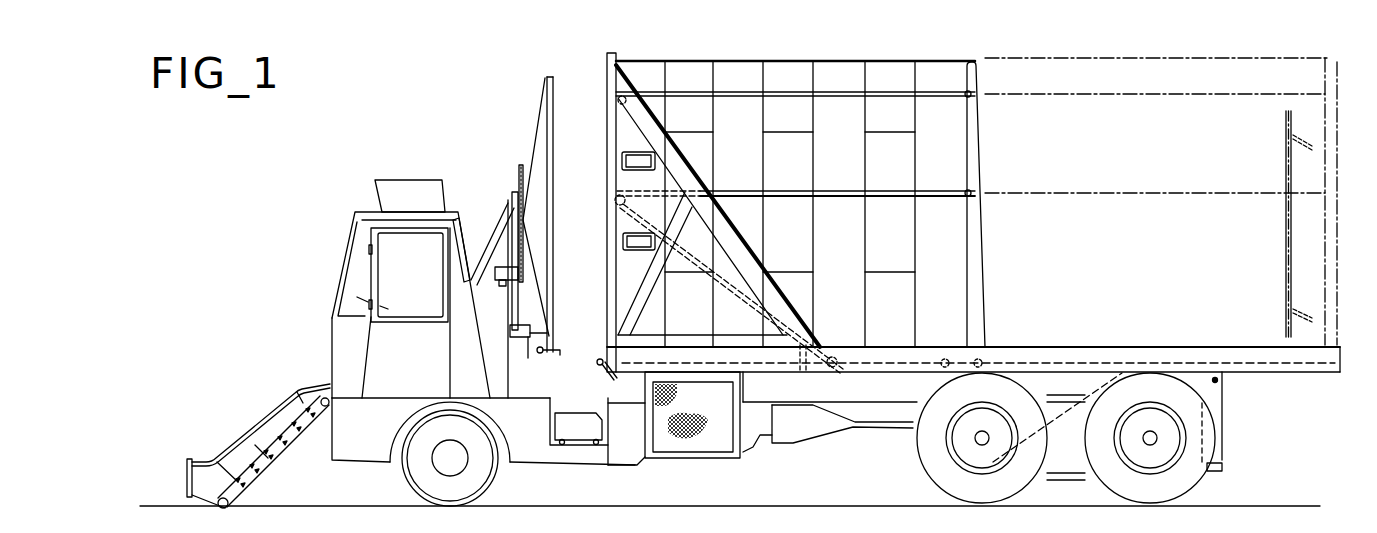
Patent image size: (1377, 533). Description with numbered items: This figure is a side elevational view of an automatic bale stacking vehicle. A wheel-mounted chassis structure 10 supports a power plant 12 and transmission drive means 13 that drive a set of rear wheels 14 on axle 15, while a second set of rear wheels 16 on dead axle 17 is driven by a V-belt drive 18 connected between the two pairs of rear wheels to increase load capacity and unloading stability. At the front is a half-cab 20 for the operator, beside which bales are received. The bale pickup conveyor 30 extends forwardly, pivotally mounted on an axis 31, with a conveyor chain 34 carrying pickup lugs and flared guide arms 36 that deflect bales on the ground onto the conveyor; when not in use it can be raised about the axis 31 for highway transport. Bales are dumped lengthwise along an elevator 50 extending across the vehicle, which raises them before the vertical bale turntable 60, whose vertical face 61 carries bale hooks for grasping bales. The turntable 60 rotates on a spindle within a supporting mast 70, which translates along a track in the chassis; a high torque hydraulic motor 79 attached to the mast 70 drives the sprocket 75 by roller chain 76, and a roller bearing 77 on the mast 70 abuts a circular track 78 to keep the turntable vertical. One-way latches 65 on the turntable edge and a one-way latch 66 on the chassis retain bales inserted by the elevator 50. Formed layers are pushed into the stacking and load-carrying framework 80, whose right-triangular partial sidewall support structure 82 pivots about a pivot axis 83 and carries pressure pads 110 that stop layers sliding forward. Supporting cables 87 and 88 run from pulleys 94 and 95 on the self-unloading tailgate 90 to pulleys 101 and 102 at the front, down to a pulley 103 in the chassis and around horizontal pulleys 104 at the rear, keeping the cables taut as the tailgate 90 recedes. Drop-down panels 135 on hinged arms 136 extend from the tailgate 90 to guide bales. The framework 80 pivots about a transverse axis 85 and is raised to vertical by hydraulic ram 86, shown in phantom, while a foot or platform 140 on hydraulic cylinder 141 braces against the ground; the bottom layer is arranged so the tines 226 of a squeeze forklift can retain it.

The chassis structure 10 is at (370, 473).
The power plant 12 is at (688, 461).
The transmission drive means 13 is at (808, 456).
The rear wheels 14 is at (920, 471).
The axle 15 is at (978, 432).
The second set of rear wheels 16 is at (1138, 490).
The dead axle 17 is at (1146, 436).
The V-belt drive 18 is at (1079, 474).
The half-cab 20 is at (358, 214).
The bale pickup conveyor 30 is at (266, 478).
The axis 31 is at (334, 405).
The conveyor chain 34 is at (262, 441).
The flared guide arms 36 is at (189, 461).
The elevator 50 is at (598, 446).
The bale turntable 60 is at (549, 76).
The vertical face 61 is at (555, 159).
The one-way latches 65 is at (543, 354).
The one-way latch 66 is at (598, 360).
The mast 70 is at (505, 201).
The sprocket 75 is at (519, 168).
The roller chain 76 is at (520, 271).
The roller bearing 77 is at (525, 356).
The circular track 78 is at (530, 330).
The high torque hydraulic motor 79 is at (505, 285).
The stacking and load-carrying framework 80 is at (1100, 344).
The partial sidewall support structure 82 is at (700, 172).
The pivot axis 83 is at (800, 372).
The transverse axis 85 is at (1218, 381).
The hydraulic ram 86 is at (1078, 420).
The supporting cable 87 is at (857, 94).
The supporting cable 88 is at (831, 192).
The self-unloading tailgate 90 is at (986, 250).
The pulley 94 is at (977, 97).
The pulley 95 is at (978, 193).
The pulley 101 is at (618, 101).
The pulley 102 is at (614, 203).
The pulley 103 is at (836, 368).
The horizontal pulleys 104 is at (1312, 376).
The pressure pads 110 is at (630, 152).
The drop-down panels 135 is at (1285, 165).
The hinged arms 136 is at (1285, 149).
The foot or platform 140 is at (1224, 469).
The hydraulic cylinder 141 is at (1223, 443).
The tines 226 is at (524, 527).